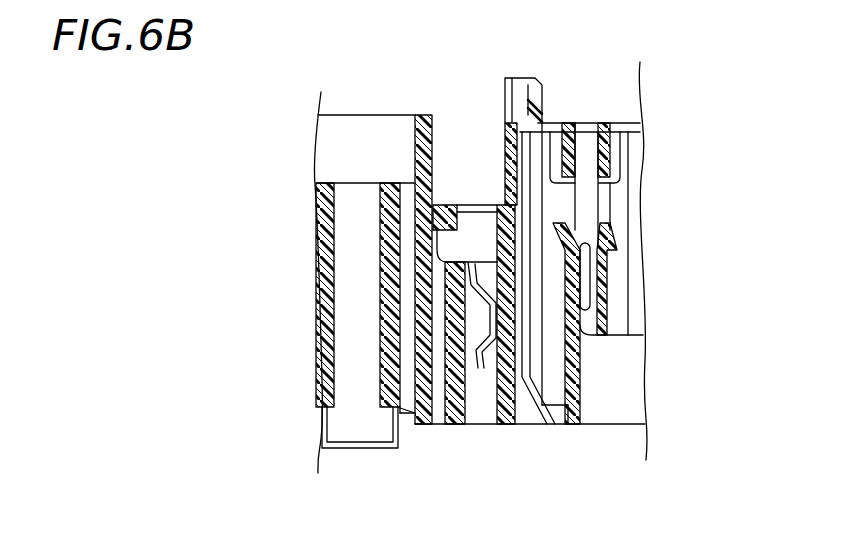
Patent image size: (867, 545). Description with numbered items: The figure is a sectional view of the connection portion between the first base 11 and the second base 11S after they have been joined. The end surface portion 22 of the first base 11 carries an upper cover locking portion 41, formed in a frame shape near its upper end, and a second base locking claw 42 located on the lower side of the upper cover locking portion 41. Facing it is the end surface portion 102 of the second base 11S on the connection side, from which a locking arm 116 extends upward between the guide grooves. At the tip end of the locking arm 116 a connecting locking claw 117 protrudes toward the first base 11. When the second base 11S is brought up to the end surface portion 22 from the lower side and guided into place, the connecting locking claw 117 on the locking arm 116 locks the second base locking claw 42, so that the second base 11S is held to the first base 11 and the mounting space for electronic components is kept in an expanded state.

The end surface portion 102 is at (433, 129).
The end surface portion 22 is at (503, 140).
The upper cover locking portion 41 is at (440, 225).
The second base locking claw 42 is at (447, 322).
The connecting locking claw 117 is at (515, 291).
The locking arm 116 is at (487, 370).
The second base 11S is at (298, 418).
The first base 11 is at (583, 439).